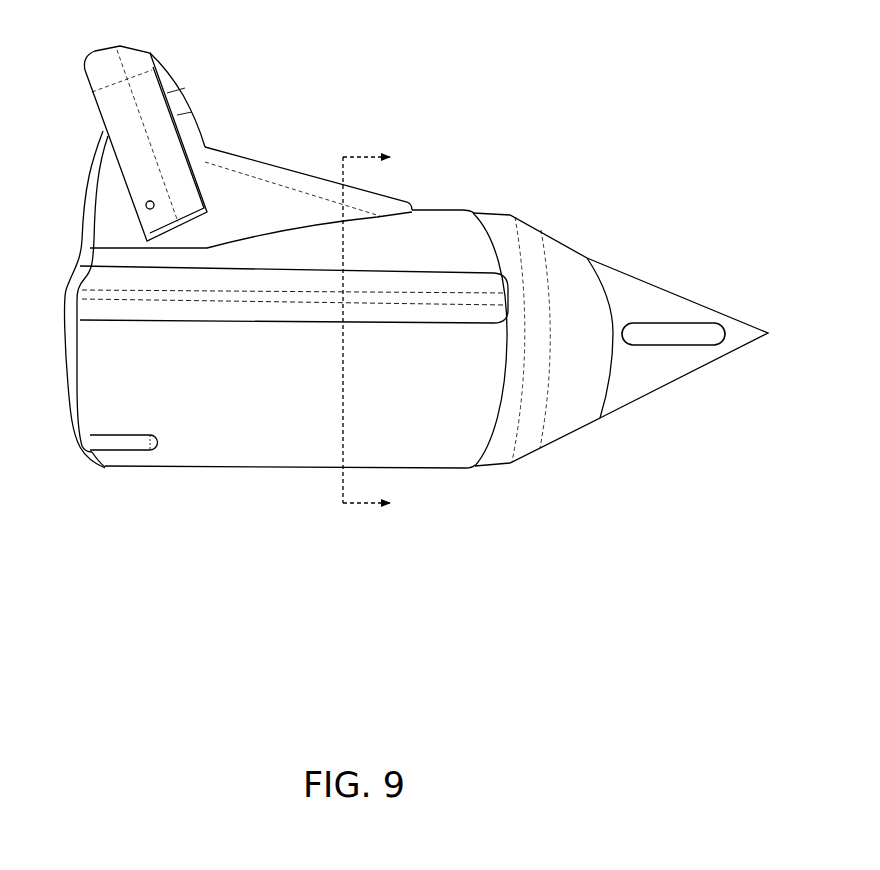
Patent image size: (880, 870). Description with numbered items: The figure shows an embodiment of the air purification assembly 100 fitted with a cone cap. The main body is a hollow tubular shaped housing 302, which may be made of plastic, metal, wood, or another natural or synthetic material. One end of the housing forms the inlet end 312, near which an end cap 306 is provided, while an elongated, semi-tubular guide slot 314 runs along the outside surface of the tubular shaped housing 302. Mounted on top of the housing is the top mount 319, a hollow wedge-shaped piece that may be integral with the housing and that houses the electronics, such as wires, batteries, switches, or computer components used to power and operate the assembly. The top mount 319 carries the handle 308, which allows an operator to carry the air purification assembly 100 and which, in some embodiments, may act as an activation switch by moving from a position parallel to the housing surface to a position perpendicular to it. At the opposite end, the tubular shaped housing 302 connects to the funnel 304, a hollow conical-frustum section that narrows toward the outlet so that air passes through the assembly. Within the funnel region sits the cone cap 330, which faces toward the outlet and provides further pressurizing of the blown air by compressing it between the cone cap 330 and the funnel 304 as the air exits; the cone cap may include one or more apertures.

The air purification assembly 100 is at (397, 323).
The tubular shaped housing 302 is at (314, 420).
The funnel 304 is at (541, 464).
The end cap 306 is at (104, 468).
The handle 308 is at (196, 101).
The inlet end 312 is at (62, 258).
The guide slots 314 is at (213, 337).
The top mount 319 is at (268, 154).
The cone cap 330 is at (667, 299).